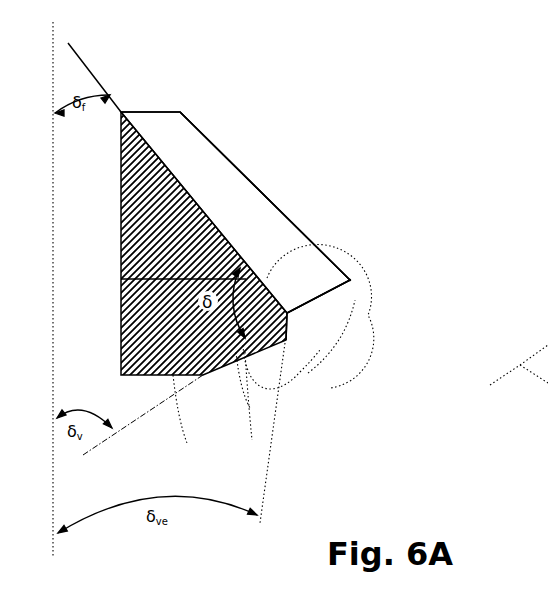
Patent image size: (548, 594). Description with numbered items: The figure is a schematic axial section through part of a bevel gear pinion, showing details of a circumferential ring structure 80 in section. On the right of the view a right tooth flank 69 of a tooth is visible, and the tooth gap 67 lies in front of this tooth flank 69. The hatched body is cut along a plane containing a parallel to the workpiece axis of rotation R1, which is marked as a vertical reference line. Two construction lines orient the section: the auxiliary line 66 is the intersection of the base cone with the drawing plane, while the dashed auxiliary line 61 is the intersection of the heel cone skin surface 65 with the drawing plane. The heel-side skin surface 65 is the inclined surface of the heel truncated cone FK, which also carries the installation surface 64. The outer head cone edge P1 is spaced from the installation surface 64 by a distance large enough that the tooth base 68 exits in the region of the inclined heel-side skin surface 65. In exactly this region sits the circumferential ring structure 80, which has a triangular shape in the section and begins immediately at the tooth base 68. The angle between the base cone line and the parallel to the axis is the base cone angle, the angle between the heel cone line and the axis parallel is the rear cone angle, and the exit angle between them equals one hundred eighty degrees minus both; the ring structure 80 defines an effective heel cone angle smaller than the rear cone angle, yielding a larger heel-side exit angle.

The dashed auxiliary line 61 is at (123, 432).
The installation surface 64 is at (180, 426).
The heel-side skin surface 65 is at (250, 413).
The auxiliary line 66 is at (82, 55).
The tooth gap 67 is at (212, 164).
The tooth base 68 is at (207, 198).
The right tooth flank 69 is at (270, 232).
The circumferential ring structure 80 is at (286, 357).
The outer head cone edge P1 is at (360, 275).
The heel truncated cone FK is at (297, 372).
The workpiece axis of rotation R1 is at (90, 563).